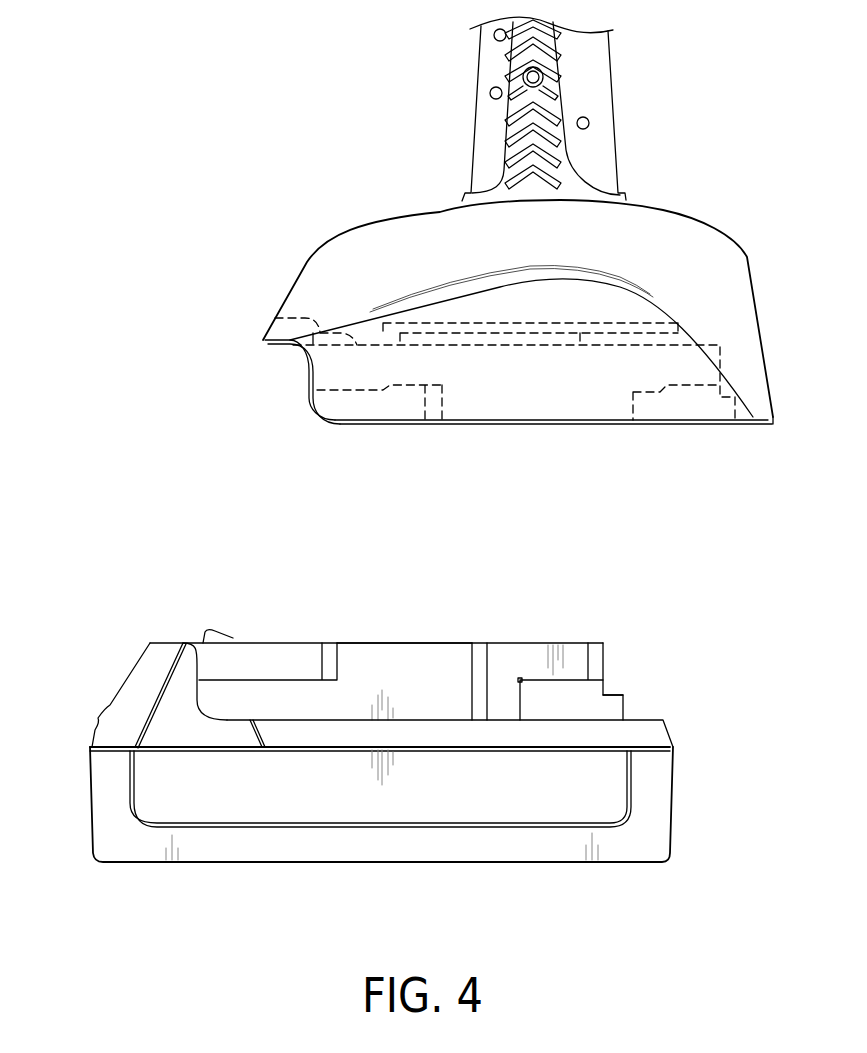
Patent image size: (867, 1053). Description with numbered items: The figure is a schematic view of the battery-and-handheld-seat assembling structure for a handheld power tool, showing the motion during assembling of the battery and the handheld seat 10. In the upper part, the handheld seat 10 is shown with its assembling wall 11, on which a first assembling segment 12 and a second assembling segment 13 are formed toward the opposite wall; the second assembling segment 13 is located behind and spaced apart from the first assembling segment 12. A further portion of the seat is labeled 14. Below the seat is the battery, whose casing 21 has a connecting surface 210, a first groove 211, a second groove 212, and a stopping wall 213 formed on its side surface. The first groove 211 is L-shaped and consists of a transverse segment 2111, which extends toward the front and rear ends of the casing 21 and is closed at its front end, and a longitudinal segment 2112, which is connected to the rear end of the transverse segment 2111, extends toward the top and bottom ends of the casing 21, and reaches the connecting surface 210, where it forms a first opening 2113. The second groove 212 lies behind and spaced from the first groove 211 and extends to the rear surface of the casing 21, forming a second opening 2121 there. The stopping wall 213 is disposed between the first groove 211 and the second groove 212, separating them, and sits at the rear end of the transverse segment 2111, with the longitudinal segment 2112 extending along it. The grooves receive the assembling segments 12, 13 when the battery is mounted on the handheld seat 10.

The handheld seat 10 is at (598, 106).
The assembling wall 11 is at (541, 407).
The first assembling segment 12 is at (378, 407).
The second assembling segment 13 is at (691, 405).
The latch portion 14 is at (278, 317).
The casing 21 is at (105, 733).
The connecting surface 210 is at (350, 643).
The first groove 211 is at (338, 700).
The transverse segment 2111 is at (282, 695).
The longitudinal segment 2112 is at (403, 652).
The first opening 2113 is at (459, 637).
The second groove 212 is at (577, 706).
The second opening 2121 is at (625, 689).
The stopping wall 213 is at (503, 703).